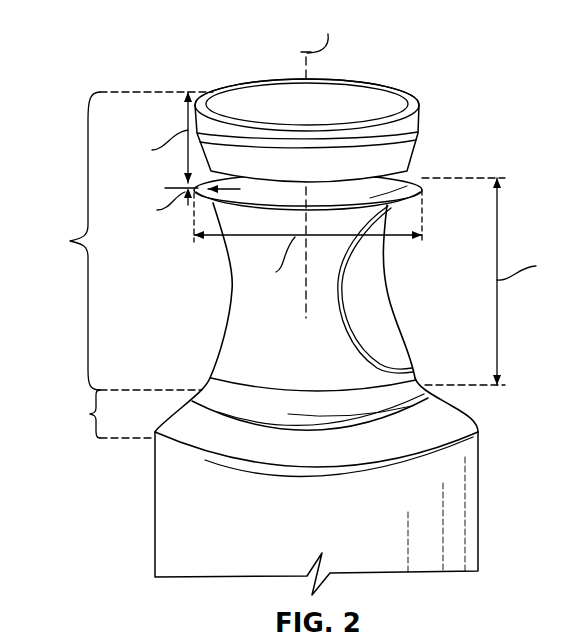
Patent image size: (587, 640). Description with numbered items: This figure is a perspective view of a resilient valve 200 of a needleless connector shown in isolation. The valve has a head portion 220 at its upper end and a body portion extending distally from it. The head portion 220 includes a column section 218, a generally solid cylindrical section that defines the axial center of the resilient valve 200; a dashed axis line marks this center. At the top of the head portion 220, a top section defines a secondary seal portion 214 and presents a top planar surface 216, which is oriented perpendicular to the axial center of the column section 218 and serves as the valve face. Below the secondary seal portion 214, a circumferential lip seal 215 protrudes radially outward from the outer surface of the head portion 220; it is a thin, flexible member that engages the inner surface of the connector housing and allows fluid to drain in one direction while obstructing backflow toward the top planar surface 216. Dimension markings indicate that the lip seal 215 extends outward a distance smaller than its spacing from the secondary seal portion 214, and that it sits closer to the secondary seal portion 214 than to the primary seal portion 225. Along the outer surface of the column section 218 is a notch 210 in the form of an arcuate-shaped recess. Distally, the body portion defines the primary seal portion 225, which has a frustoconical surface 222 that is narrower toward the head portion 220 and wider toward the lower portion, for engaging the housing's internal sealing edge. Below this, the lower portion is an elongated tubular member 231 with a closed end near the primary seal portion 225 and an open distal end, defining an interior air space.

The resilient valve 200 is at (192, 44).
The notch 210 is at (232, 285).
The secondary seal portion 214 is at (411, 104).
The circumferential lip seal 215 is at (410, 178).
The top planar surface 216 is at (349, 90).
The column section 218 is at (338, 352).
The head portion 220 is at (117, 241).
The frustoconical surface 222 is at (455, 420).
The primary seal portion 225 is at (100, 414).
The elongated tubular member 231 is at (168, 513).